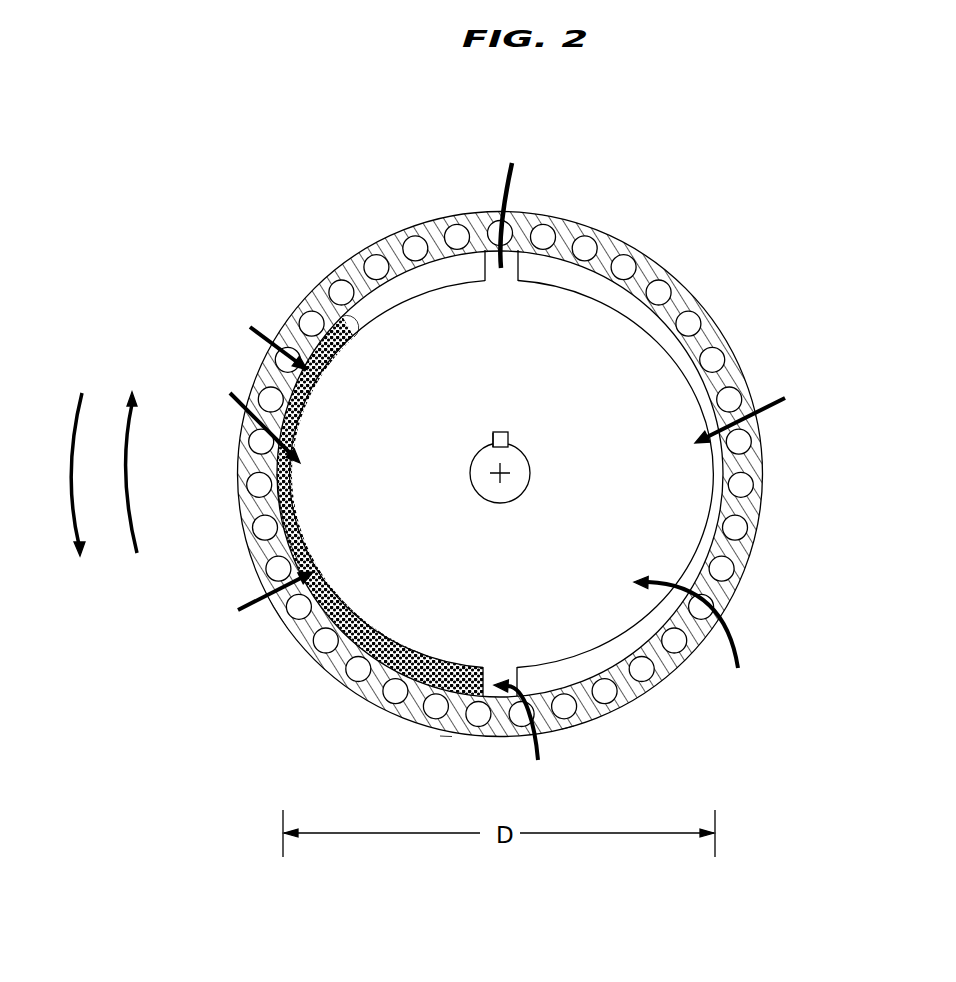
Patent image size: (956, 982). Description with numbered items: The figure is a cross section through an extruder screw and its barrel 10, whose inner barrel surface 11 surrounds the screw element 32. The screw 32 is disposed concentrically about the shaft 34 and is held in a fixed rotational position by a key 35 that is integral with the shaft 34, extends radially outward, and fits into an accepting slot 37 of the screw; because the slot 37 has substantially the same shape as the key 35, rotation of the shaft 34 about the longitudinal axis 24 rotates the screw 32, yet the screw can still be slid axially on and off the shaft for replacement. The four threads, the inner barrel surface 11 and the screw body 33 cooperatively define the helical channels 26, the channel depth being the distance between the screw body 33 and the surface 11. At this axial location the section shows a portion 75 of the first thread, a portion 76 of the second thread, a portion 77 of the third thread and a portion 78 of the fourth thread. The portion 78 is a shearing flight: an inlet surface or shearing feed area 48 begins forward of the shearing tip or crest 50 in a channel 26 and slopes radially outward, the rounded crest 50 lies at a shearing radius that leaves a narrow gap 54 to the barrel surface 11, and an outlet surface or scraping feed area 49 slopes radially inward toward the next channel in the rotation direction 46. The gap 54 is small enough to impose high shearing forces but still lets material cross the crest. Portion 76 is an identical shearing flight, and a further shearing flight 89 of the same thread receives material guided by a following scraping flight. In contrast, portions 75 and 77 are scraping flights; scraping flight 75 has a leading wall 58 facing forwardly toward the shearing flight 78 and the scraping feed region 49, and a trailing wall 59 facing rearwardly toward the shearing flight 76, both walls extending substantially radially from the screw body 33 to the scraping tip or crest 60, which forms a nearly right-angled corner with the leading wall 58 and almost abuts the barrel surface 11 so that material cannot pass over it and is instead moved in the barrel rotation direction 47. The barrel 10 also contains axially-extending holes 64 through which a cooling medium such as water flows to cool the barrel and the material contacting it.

The barrel 10 is at (764, 469).
The inner barrel surface 11 is at (305, 318).
The channels 26 is at (422, 275).
The axially-extending holes 64 is at (721, 357).
The screw body 33 is at (550, 280).
The gap 54 is at (277, 463).
The shearing tip or crest 50 is at (278, 495).
The shearing flight 89 is at (343, 318).
The axis 24 is at (529, 478).
The shaft 34 is at (508, 500).
The accepting slot 37 is at (503, 432).
The key 35 is at (493, 440).
The portion of thread 73 77 is at (518, 202).
The inlet surface or shearing feed area 48 is at (267, 336).
The portion of thread 74 (shearing flight) 78 is at (249, 419).
The outlet surface or scraping feed area 49 is at (264, 609).
The portion of thread 72 (shearing flight) 76 is at (753, 415).
The screw element 32 is at (695, 638).
The portion of thread 71 (scraping flight) 75 is at (532, 738).
The barrel rotation direction 47 is at (82, 498).
The rotation direction 46 is at (137, 498).
The leading wall 58 is at (446, 737).
The scraping tip or crest 60 is at (491, 738).
The trailing wall 59 is at (568, 738).